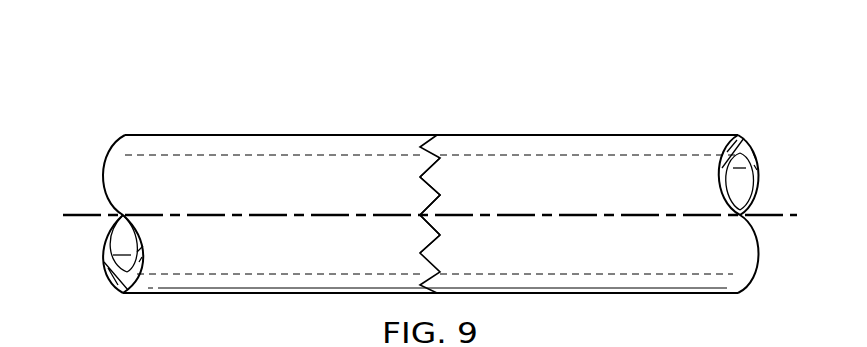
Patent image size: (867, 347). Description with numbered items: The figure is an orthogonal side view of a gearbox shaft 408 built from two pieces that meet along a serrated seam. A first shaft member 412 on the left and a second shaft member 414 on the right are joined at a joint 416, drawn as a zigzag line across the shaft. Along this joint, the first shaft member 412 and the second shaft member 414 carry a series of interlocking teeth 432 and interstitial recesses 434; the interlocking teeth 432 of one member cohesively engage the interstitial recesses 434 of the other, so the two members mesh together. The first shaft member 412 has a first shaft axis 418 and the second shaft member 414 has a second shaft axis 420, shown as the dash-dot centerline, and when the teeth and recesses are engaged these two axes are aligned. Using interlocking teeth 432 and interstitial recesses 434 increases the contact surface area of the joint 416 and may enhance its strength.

The gearbox shaft 408 is at (431, 166).
The first shaft member 412 is at (172, 135).
The second shaft member 414 is at (687, 135).
The joint 416 is at (425, 135).
The first shaft axis 418 is at (83, 211).
The second shaft axis 420 is at (775, 211).
The interlocking teeth 432 is at (428, 175).
The interstitial recesses 434 is at (420, 215).